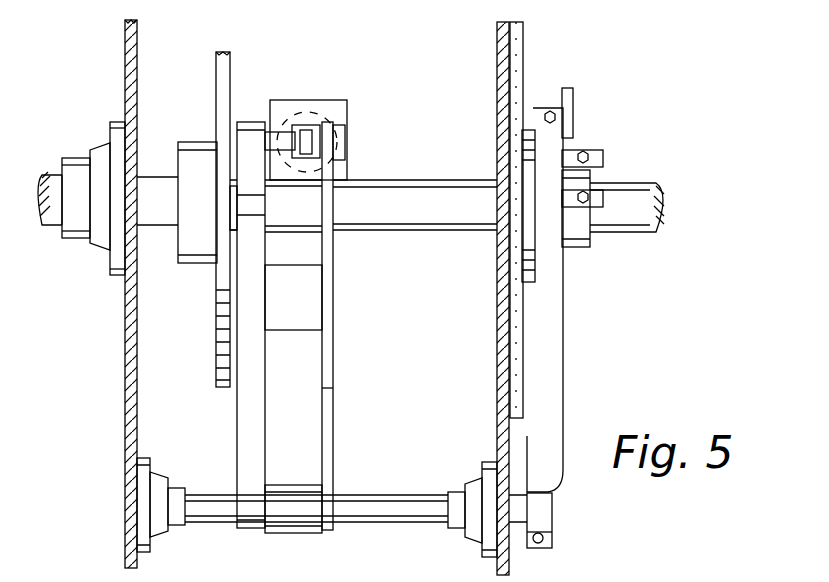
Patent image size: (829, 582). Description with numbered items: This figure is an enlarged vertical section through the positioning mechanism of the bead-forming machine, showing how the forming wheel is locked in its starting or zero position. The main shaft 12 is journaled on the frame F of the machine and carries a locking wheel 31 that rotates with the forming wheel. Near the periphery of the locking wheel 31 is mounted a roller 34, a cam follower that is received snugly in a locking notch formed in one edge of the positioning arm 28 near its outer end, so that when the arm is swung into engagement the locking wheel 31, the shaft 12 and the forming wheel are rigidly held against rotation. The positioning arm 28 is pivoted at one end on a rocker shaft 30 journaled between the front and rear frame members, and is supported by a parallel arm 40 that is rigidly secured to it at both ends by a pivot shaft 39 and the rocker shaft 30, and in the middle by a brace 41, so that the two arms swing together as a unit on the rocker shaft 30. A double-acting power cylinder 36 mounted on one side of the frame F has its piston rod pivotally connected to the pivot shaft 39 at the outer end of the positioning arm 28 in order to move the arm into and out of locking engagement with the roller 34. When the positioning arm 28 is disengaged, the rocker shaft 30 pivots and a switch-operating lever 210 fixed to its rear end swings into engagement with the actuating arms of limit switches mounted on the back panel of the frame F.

The main shaft 12 is at (442, 190).
The positioning arm 28 is at (250, 397).
The rocker shaft 30 is at (412, 523).
The locking wheel 31 is at (220, 292).
The roller 34 is at (255, 199).
The double-acting power cylinder 36 is at (346, 108).
The pivot shaft 39 is at (280, 133).
The parallel arm 40 is at (329, 366).
The brace 41 is at (315, 297).
The switch-operating lever 210 is at (555, 357).
The frame F is at (122, 422).